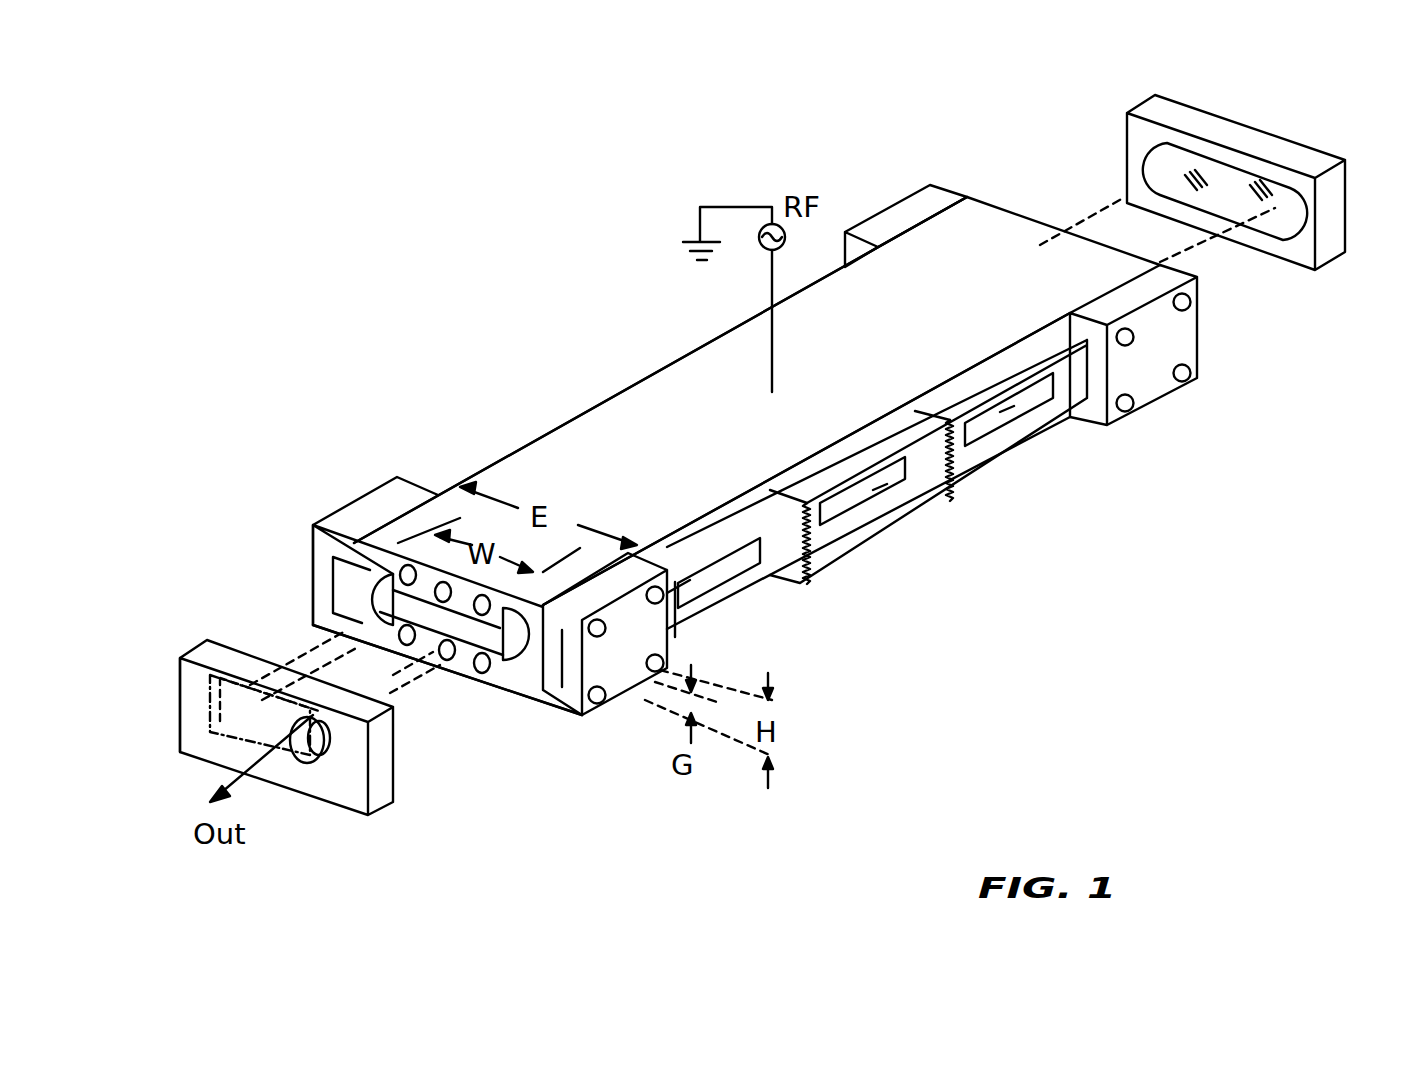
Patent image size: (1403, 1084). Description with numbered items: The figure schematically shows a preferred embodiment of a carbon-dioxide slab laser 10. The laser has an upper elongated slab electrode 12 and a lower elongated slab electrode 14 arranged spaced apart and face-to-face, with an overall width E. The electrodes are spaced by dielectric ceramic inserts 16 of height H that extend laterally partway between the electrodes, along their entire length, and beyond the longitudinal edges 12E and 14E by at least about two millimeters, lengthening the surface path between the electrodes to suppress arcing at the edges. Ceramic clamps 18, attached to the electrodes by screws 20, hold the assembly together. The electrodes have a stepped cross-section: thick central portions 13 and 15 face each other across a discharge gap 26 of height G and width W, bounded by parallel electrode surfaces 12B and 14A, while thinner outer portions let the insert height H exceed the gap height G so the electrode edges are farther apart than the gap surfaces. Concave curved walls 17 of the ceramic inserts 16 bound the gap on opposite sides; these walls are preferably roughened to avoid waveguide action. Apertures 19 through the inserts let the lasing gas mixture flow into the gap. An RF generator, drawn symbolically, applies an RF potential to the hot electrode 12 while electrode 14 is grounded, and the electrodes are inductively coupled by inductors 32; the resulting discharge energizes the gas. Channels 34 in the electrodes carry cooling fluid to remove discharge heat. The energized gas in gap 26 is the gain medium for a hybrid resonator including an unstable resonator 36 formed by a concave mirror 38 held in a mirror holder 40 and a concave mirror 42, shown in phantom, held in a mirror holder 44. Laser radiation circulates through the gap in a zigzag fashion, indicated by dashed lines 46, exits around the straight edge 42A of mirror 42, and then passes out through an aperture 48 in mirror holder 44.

The CO2 slab laser 10 is at (1080, 652).
The upper elongated slab electrode 12 is at (558, 420).
The electrode surface 12B is at (458, 632).
The longitudinal edge 12E is at (700, 512).
The thick central portion 13 is at (437, 593).
The lower elongated slab electrode 14 is at (522, 700).
The electrode surface 14A is at (440, 635).
The longitudinal edge 14E is at (322, 574).
The thick central portion 15 is at (312, 627).
The ceramic insert 16 is at (862, 521).
The concave curved wall 17 is at (395, 598).
The ceramic clamp 18 is at (655, 630).
The aperture 19 is at (882, 492).
The screw 20 is at (676, 597).
The discharge gap 26 is at (490, 672).
The inductor 32 is at (955, 488).
The channel 34 is at (410, 578).
The unstable resonator 36 is at (752, 454).
The concave mirror 38 is at (1295, 220).
The mirror holder 40 is at (1303, 258).
The concave mirror 42 is at (233, 712).
The straight edge 42A is at (207, 750).
The mirror holder 44 is at (208, 750).
The dashed lines 46 is at (313, 607).
The aperture 48 is at (312, 765).